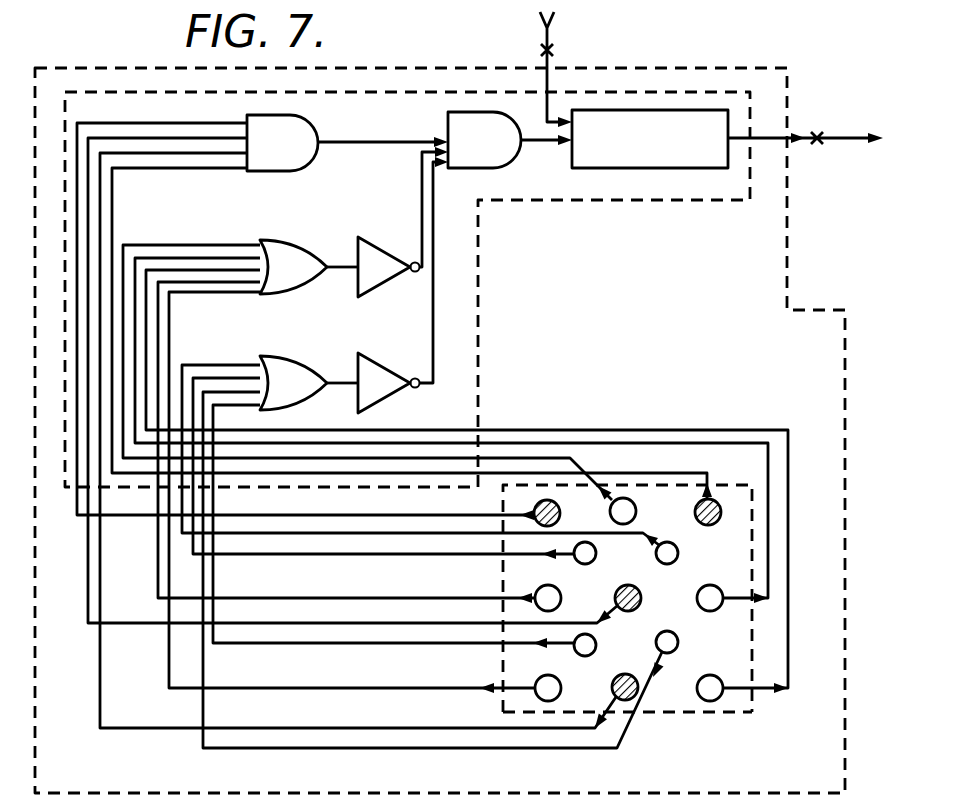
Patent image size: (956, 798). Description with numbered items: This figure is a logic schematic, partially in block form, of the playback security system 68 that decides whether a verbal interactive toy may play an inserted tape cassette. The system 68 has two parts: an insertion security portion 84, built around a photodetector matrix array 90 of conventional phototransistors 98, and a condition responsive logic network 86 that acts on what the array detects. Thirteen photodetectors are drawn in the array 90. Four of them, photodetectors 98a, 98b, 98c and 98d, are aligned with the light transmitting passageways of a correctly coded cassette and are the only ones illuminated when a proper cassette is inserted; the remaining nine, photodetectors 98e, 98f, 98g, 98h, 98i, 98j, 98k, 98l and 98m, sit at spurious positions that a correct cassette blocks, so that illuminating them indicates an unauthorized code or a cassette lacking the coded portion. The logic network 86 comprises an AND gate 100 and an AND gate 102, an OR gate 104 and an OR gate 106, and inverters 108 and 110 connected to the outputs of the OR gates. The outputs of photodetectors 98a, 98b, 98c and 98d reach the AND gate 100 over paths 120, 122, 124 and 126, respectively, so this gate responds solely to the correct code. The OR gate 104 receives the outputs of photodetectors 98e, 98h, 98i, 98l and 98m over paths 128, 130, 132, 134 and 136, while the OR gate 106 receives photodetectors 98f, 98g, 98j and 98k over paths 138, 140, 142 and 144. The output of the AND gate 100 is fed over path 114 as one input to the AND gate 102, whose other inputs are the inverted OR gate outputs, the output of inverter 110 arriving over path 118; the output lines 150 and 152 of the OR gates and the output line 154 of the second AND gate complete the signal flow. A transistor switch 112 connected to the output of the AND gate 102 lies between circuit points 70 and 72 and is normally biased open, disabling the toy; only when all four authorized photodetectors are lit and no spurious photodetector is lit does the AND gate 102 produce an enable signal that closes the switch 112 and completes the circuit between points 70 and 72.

The playback security system 68 is at (846, 490).
The circuit point 70 is at (818, 131).
The circuit point 72 is at (553, 50).
The insertion security portion 84 is at (762, 704).
The condition responsive logic network 86 is at (435, 85).
The photodetector matrix array 90 is at (697, 720).
The phototransistor 98 is at (635, 580).
The photodetector 98a is at (575, 514).
The photodetector 98b is at (718, 502).
The photodetector 98c is at (641, 598).
The photodetector 98d is at (636, 668).
The spurious position photodetector 98e is at (636, 511).
The spurious position photodetector 98f is at (596, 553).
The spurious position photodetector 98g is at (672, 539).
The spurious position photodetector 98h is at (546, 585).
The spurious position photodetector 98i is at (708, 612).
The spurious position photodetector 98j is at (594, 638).
The spurious position photodetector 98k is at (670, 628).
The spurious position photodetector 98l is at (559, 683).
The spurious position photodetector 98m is at (713, 676).
The AND gate 100 is at (288, 172).
The AND gate 102 is at (470, 169).
The OR gate 104 is at (297, 292).
The OR gate 106 is at (281, 355).
The logic inverter 108 is at (398, 274).
The logic inverter 110 is at (398, 373).
The transistor switch 112 is at (598, 169).
The path 114 is at (383, 143).
The path 118 is at (433, 318).
The path 120 is at (152, 123).
The path 122 is at (151, 169).
The path 124 is at (202, 138).
The path 126 is at (203, 154).
The path 128 is at (578, 460).
The path 130 is at (407, 596).
The path 132 is at (770, 540).
The path 134 is at (390, 690).
The path 136 is at (789, 620).
The path 138 is at (313, 557).
The path 140 is at (304, 532).
The path 142 is at (393, 645).
The path 144 is at (315, 750).
The OR gate output line 150 is at (335, 265).
The OR gate output line 152 is at (340, 384).
The AND gate output line 154 is at (540, 142).